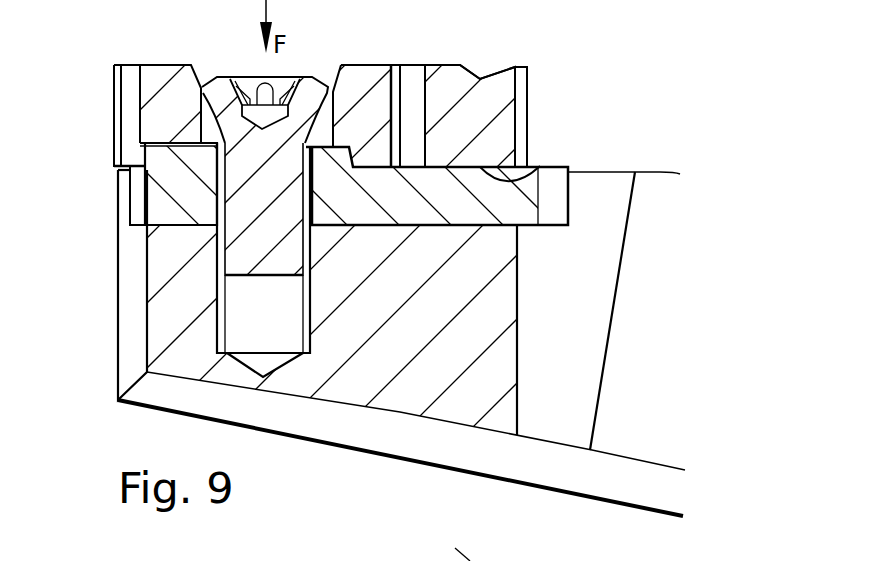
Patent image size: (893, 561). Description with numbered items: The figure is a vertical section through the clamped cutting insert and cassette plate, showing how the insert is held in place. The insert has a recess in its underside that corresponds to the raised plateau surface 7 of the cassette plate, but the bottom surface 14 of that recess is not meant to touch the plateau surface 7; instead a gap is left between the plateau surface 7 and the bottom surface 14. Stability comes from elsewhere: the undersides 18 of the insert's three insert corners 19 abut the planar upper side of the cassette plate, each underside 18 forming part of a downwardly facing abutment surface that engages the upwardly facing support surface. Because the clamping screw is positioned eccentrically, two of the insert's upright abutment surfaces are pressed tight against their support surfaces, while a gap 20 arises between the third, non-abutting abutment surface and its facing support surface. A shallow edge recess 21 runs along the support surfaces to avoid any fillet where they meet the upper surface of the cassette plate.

The raised plateau surface 7 is at (177, 145).
The bottom surface of the recess 14 is at (178, 143).
The undersides of the insert corners 18 is at (540, 166).
The insert corners 19 is at (487, 98).
The gap 20 is at (142, 156).
The edge recess 21 is at (370, 166).